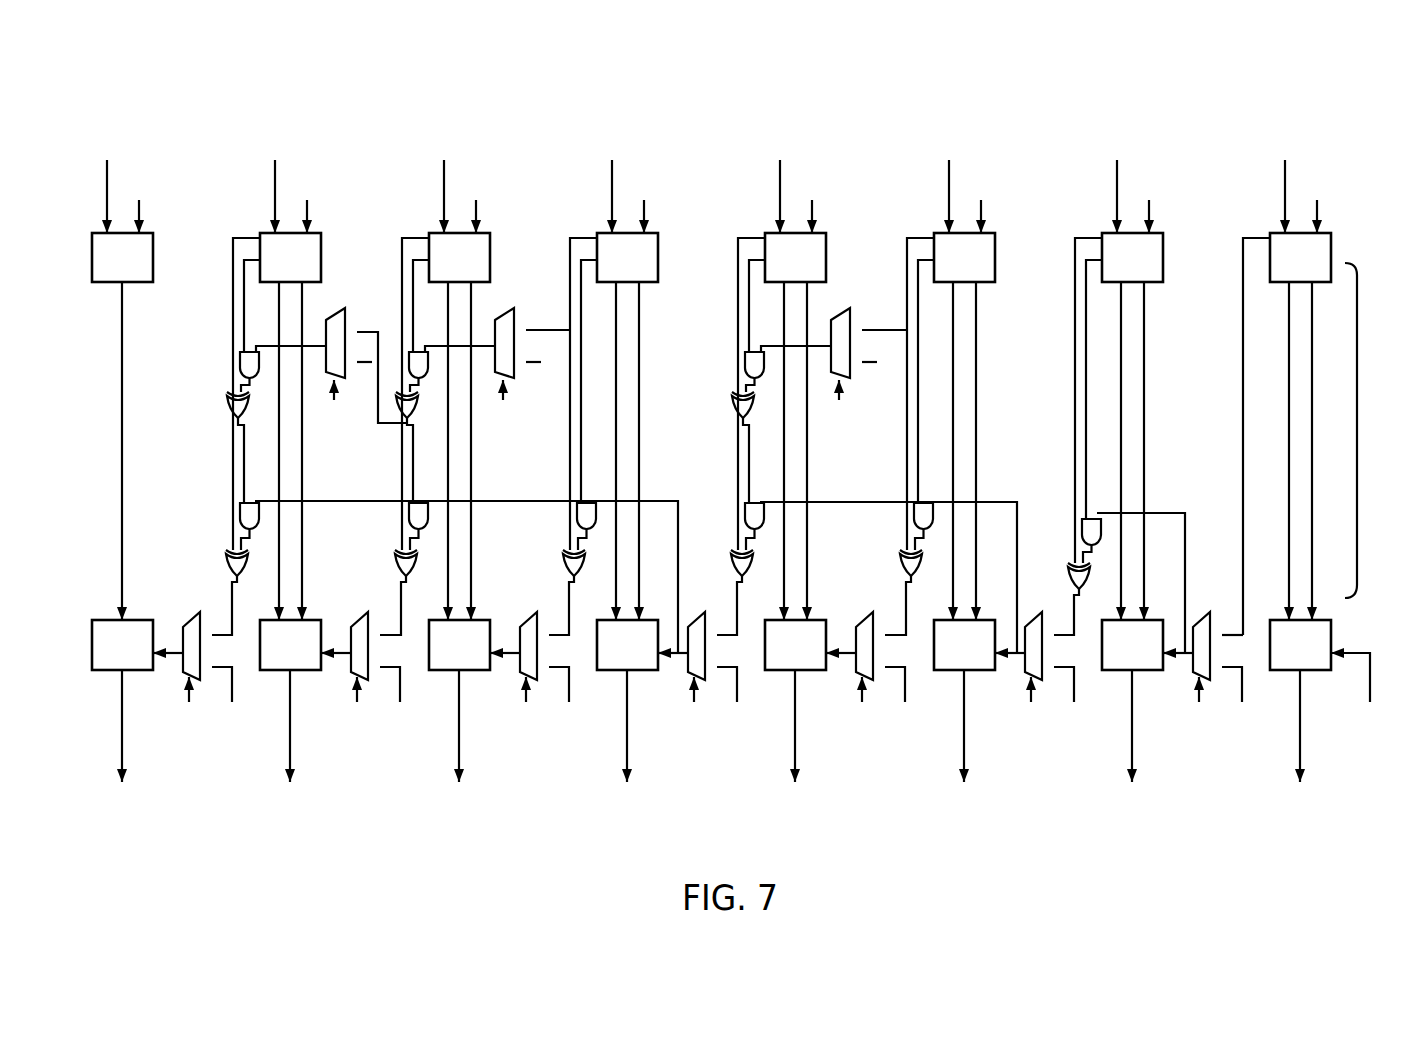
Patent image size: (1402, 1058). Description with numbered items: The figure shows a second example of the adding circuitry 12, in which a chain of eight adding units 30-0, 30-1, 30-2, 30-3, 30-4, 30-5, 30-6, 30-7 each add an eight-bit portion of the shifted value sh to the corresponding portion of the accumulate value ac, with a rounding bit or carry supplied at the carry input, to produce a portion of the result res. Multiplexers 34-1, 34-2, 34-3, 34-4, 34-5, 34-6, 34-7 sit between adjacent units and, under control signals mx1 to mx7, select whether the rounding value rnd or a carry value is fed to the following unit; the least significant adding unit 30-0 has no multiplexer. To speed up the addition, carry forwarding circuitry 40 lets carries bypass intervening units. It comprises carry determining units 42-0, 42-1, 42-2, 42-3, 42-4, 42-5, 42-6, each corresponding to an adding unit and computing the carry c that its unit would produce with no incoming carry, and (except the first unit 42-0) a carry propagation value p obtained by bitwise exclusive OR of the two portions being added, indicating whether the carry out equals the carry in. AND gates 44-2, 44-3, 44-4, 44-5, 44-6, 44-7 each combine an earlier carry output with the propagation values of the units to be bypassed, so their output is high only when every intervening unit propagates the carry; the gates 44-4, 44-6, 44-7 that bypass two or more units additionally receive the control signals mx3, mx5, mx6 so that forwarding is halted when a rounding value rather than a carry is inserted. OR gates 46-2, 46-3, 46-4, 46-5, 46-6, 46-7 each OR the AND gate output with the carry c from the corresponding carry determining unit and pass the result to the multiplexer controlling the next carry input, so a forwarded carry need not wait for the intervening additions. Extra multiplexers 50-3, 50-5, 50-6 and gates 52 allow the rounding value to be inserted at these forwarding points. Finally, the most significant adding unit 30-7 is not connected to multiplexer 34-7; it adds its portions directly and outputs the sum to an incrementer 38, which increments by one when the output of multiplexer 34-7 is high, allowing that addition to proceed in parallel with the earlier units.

The adding circuitry 12 is at (203, 107).
The adding unit 30-7 is at (146, 283).
The adding unit 30-6 is at (278, 672).
The adding unit 30-5 is at (447, 672).
The adding unit 30-4 is at (615, 672).
The adding unit 30-3 is at (783, 672).
The adding unit 30-2 is at (952, 672).
The adding unit 30-1 is at (1120, 672).
The adding unit 30-0 is at (1290, 672).
The incrementer 38 is at (102, 620).
The carry determining unit 42-6 is at (321, 253).
The carry determining unit 42-5 is at (490, 253).
The carry determining unit 42-4 is at (658, 253).
The carry determining unit 42-3 is at (826, 253).
The carry determining unit 42-2 is at (995, 253).
The carry determining unit 42-1 is at (1163, 253).
The carry determining unit 42-0 is at (1331, 253).
The multiplexer 50-6 is at (356, 300).
The multiplexer 50-5 is at (525, 300).
The multiplexer 50-3 is at (861, 300).
The gates 52 is at (240, 365).
The AND gate 44-7 is at (240, 510).
The AND gate 44-6 is at (409, 509).
The AND gate 44-5 is at (577, 509).
The AND gate 44-4 is at (745, 509).
The AND gate 44-3 is at (914, 509).
The AND gate 44-2 is at (1082, 525).
The OR gate 46-7 is at (228, 561).
The OR gate 46-6 is at (397, 561).
The OR gate 46-5 is at (565, 561).
The OR gate 46-4 is at (732, 561).
The OR gate 46-3 is at (902, 561).
The OR gate 46-2 is at (1068, 575).
The multiplexer 34-7 is at (188, 618).
The multiplexer 34-6 is at (356, 618).
The multiplexer 34-5 is at (525, 618).
The multiplexer 34-4 is at (693, 618).
The multiplexer 34-3 is at (861, 618).
The multiplexer 34-2 is at (1030, 615).
The multiplexer 34-1 is at (1216, 603).
The carry forwarding circuitry 40 is at (1357, 432).